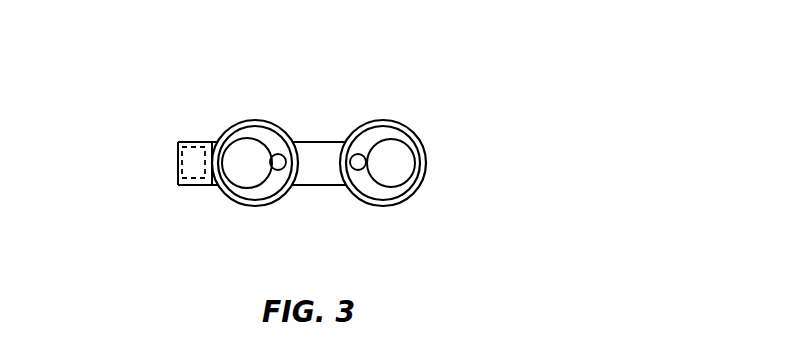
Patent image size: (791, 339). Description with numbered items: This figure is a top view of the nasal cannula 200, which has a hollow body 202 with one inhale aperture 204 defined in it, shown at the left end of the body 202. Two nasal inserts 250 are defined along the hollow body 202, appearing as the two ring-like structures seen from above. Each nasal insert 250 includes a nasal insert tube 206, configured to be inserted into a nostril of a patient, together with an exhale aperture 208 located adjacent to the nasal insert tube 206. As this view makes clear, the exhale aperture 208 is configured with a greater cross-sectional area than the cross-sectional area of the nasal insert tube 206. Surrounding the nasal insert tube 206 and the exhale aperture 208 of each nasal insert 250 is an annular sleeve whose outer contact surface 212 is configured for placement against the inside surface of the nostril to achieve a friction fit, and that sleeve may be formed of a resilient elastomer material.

The nasal cannula 200 is at (428, 100).
The hollow body 202 is at (313, 157).
The inhale aperture 204 is at (178, 168).
The nasal insert tube 206 is at (360, 156).
The exhale aperture 208 is at (245, 153).
The contact surface 212 is at (232, 197).
The nasal insert 250 is at (373, 203).